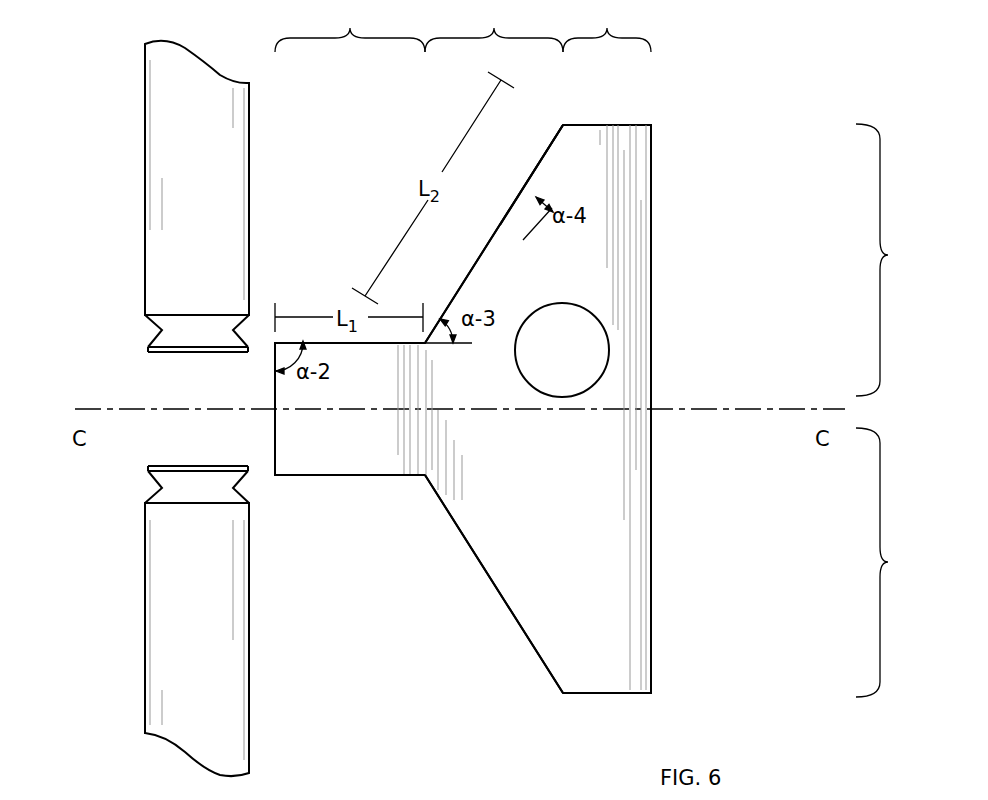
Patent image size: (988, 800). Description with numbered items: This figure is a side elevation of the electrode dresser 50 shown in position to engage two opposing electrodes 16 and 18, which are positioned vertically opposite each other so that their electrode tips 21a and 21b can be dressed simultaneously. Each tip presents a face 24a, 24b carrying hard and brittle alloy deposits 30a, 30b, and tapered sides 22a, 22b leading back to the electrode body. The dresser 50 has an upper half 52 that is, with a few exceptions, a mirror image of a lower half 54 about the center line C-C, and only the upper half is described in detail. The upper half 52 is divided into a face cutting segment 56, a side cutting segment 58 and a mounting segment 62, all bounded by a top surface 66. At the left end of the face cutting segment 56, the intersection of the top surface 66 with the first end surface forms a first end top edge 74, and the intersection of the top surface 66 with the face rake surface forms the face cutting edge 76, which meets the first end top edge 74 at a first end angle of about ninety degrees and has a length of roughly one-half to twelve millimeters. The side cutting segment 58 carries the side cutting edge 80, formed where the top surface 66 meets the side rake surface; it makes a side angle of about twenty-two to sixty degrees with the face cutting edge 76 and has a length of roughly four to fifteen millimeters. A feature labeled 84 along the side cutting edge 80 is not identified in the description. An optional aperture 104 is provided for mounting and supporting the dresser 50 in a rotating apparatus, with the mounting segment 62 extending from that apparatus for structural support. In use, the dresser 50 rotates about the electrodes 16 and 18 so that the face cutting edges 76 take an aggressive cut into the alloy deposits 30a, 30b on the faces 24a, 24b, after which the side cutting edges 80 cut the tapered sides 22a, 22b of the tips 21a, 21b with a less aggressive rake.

The electrode 16 is at (145, 152).
The electrode 18 is at (145, 618).
The electrode tip 21a is at (135, 354).
The tapered side 22a is at (160, 330).
The alloy deposit 30a is at (158, 348).
The face 24a is at (190, 353).
The electrode tip 21b is at (135, 464).
The tapered side 22b is at (160, 488).
The alloy deposit 30b is at (158, 470).
The face 24b is at (192, 466).
The electrode dresser 50 is at (457, 409).
The upper half 52 is at (887, 260).
The lower half 54 is at (887, 562).
The face cutting segment 56 is at (350, 27).
The side cutting segment 58 is at (494, 27).
The mounting segment 62 is at (607, 27).
The top surface 66 is at (594, 259).
The first end top edge 74 is at (275, 437).
The face cutting edge 76 is at (355, 344).
The side cutting edge 80 is at (494, 271).
The upper tapered surface portion 84 is at (547, 172).
The aperture 104 is at (603, 370).